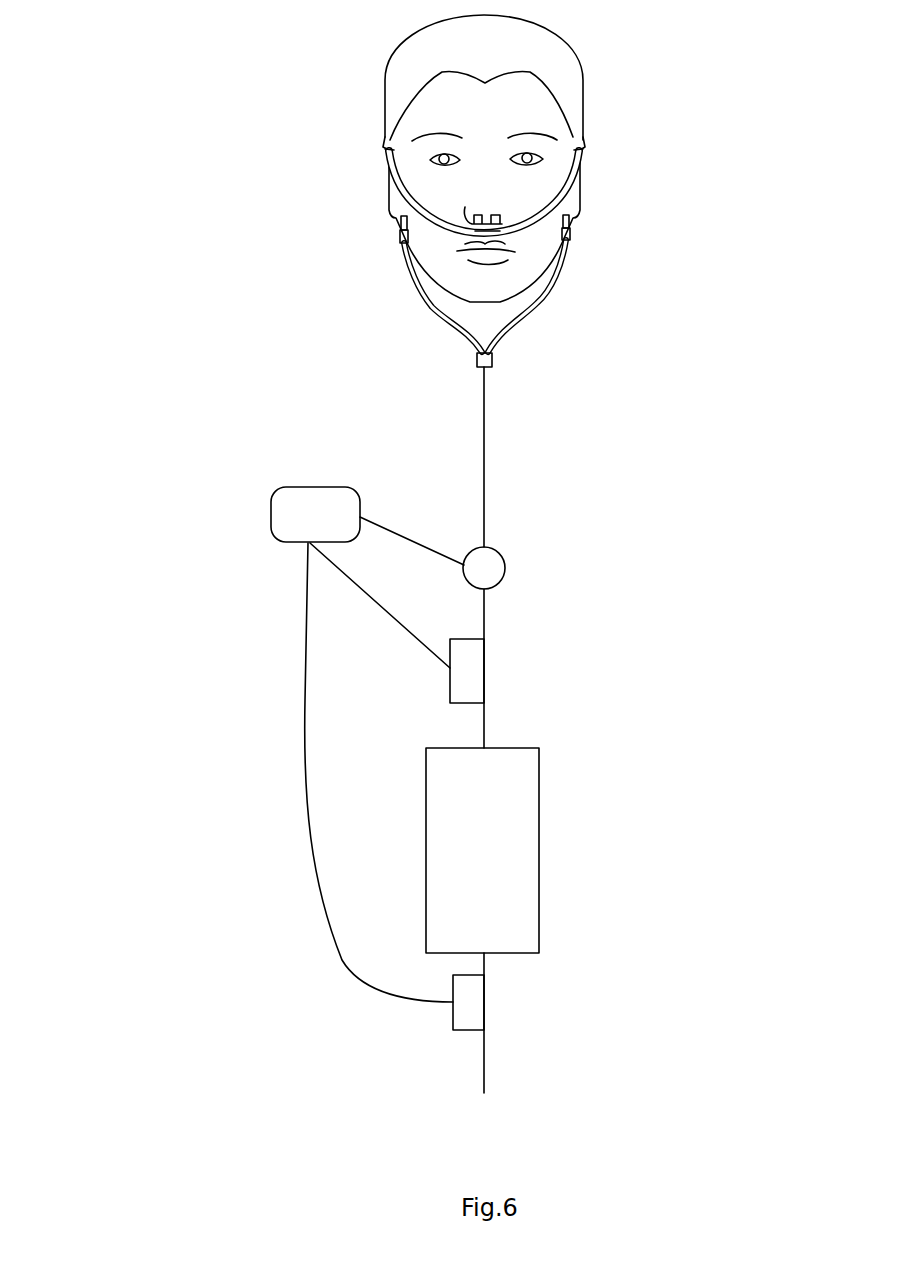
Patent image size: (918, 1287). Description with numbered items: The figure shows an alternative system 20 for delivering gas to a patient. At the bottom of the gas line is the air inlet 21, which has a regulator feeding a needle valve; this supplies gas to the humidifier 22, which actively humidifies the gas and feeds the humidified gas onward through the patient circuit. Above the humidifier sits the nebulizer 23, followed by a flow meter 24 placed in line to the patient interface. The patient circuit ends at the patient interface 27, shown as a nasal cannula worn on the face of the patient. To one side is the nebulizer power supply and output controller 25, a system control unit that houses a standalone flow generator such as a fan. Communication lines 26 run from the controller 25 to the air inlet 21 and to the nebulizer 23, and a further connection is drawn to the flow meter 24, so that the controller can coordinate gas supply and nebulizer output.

The alternative system 20 is at (190, 352).
The air inlet 21 is at (484, 1012).
The humidifier 22 is at (539, 845).
The nebulizer 23 is at (484, 665).
The flow meter 24 is at (505, 570).
The nebulizer power supply and output controller 25 is at (273, 540).
The communication lines 26 is at (352, 583).
The patient interface 27 is at (408, 277).